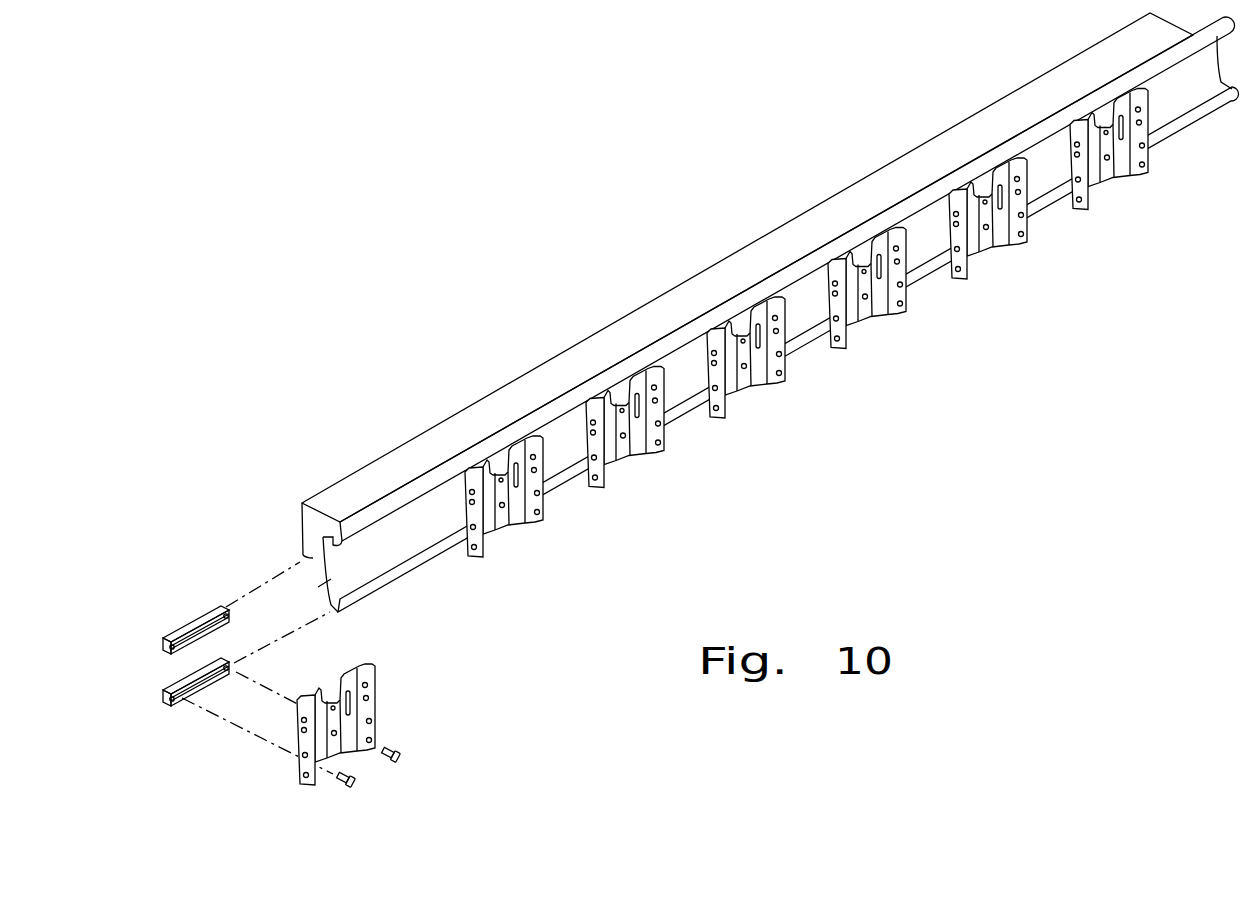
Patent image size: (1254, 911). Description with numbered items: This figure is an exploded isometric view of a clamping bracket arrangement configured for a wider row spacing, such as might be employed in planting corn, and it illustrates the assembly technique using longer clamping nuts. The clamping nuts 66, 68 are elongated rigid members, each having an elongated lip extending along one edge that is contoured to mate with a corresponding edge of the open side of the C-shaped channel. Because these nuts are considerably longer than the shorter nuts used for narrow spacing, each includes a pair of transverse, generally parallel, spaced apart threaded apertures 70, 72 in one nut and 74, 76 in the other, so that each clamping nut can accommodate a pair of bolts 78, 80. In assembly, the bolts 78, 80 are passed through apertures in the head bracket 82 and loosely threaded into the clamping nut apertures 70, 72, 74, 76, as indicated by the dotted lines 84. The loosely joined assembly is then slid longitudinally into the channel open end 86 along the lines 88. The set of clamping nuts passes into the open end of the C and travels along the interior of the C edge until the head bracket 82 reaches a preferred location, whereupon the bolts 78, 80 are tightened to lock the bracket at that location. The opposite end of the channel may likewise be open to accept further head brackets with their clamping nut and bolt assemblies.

The clamping nut 66 is at (166, 647).
The clamping nut 68 is at (166, 700).
The threaded aperture 70 is at (222, 610).
The threaded aperture 72 is at (173, 640).
The threaded aperture 74 is at (232, 666).
The threaded aperture 76 is at (176, 698).
The bolt 78 is at (352, 786).
The bolt 80 is at (402, 759).
The head bracket 82 is at (308, 787).
The dotted lines 84 is at (268, 740).
The channel open end 86 is at (322, 583).
The lines 88 is at (282, 572).